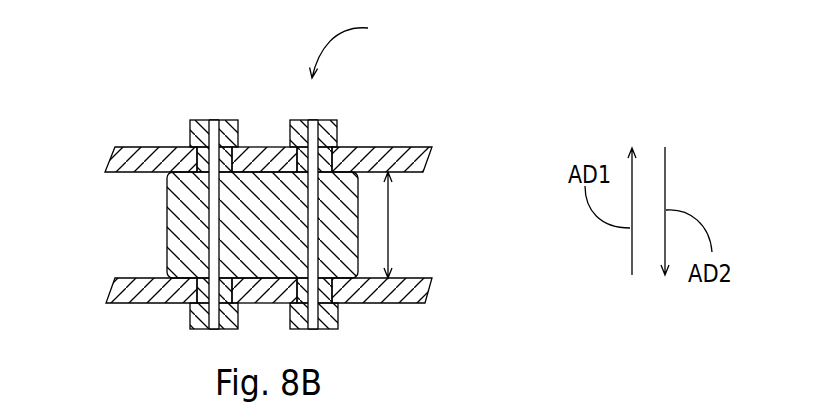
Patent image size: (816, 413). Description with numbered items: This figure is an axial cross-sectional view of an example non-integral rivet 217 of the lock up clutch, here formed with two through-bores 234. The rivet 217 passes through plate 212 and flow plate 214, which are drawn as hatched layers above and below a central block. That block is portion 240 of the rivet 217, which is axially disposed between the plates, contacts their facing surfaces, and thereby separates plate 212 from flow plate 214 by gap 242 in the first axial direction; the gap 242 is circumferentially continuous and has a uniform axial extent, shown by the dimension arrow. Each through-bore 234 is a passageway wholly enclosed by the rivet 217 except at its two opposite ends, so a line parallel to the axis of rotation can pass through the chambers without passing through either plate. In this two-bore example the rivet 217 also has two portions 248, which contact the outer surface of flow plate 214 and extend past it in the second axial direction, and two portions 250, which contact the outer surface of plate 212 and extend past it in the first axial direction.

The plate 212 is at (118, 147).
The flow plate 214 is at (140, 303).
The non-integral rivet 217 is at (357, 45).
The through-bore 234 is at (212, 120).
The portion 240 is at (167, 233).
The gap 242 is at (389, 228).
The portion 248 is at (190, 325).
The portion 250 is at (188, 130).